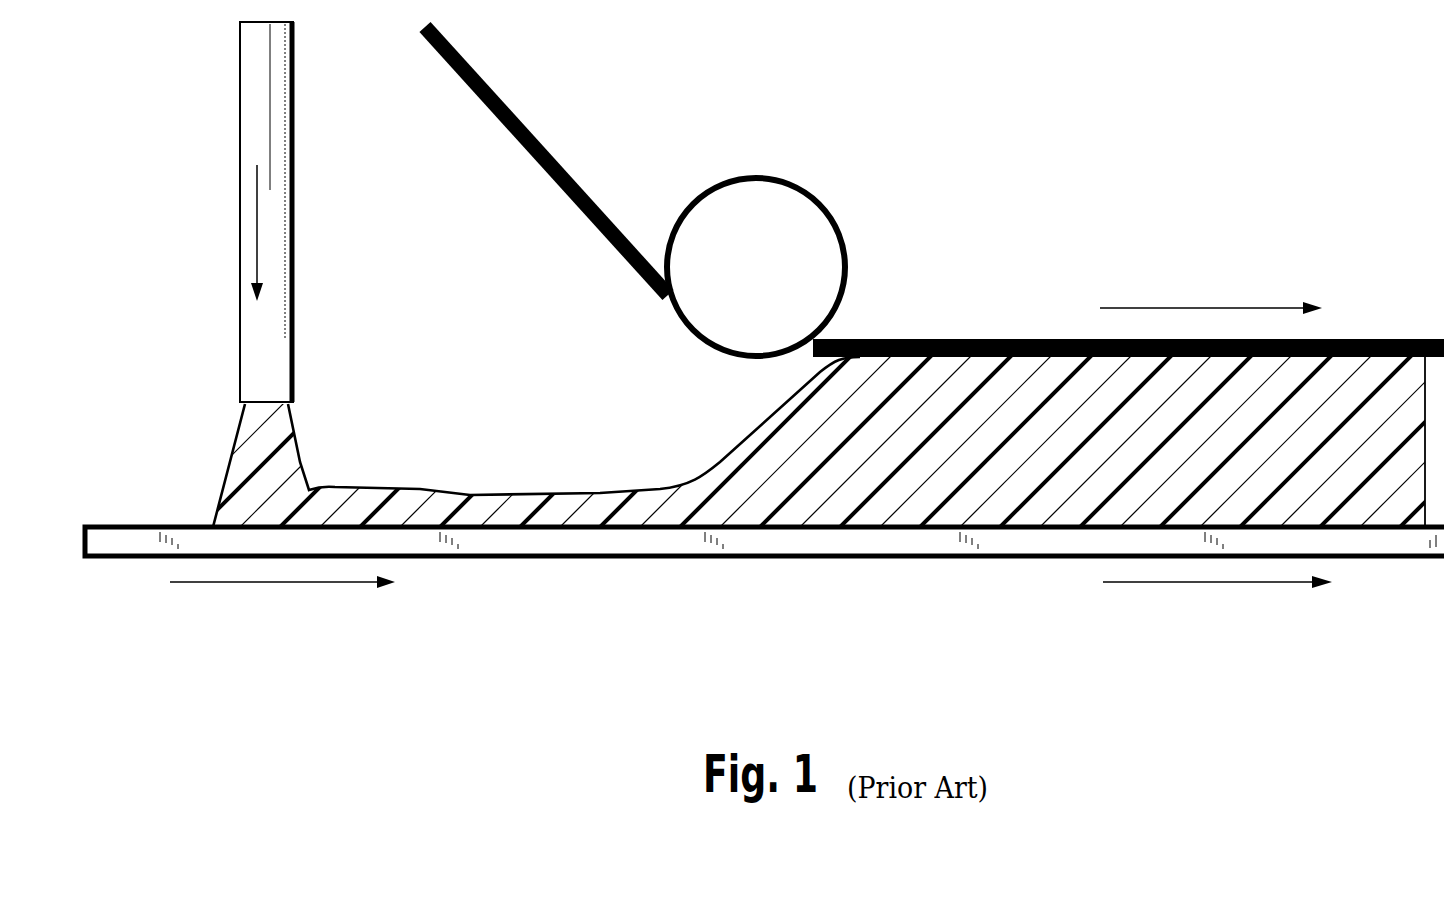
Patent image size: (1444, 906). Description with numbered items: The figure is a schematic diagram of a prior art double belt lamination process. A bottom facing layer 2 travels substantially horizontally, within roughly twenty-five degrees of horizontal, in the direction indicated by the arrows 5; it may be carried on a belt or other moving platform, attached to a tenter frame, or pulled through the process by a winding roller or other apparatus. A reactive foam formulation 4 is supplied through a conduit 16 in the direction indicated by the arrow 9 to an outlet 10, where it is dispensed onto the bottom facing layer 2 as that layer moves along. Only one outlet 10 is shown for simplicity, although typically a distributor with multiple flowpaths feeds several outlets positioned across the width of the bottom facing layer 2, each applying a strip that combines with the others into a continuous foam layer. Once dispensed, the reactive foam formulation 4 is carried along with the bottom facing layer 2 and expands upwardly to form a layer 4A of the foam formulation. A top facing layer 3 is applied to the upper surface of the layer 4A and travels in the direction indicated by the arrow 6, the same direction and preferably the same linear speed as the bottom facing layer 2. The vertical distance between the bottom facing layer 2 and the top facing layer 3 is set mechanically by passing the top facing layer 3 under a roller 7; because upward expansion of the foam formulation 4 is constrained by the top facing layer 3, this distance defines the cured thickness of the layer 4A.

The bottom facing layer 2 is at (777, 542).
The top facing layer 3 is at (537, 133).
The reactive foam formulation 4 is at (523, 493).
The layer of reactive foam formulation 4A is at (1378, 450).
The arrows indicating direction of travel 5 is at (260, 582).
The arrow indicating direction of travel of top facing layer 6 is at (1247, 307).
The roller 7 is at (812, 197).
The arrow indicating direction of supply 9 is at (255, 225).
The outlet 10 is at (243, 407).
The conduit 16 is at (255, 93).